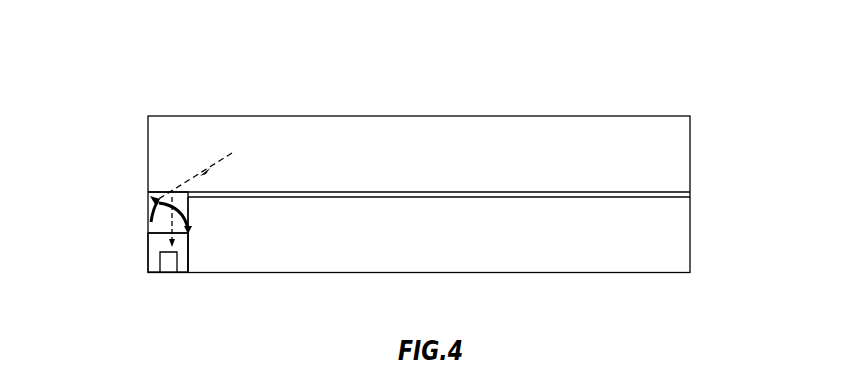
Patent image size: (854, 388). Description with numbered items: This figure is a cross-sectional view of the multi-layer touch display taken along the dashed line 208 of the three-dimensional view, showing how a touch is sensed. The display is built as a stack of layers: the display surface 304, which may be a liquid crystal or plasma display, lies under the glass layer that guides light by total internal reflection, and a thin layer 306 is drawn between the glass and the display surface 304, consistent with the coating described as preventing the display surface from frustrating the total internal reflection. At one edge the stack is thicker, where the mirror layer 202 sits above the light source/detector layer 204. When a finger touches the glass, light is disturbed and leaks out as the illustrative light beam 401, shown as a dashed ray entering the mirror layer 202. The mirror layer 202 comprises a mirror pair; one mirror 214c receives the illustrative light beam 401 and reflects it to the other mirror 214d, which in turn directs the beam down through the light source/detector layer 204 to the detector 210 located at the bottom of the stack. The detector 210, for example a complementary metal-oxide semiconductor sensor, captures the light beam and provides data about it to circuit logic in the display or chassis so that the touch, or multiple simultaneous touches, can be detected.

The dashed line 208 is at (148, 78).
The mirror layer 202 is at (128, 232).
The light source/detector layer 204 is at (212, 264).
The detector 210 is at (170, 263).
The mirror 214c is at (145, 224).
The mirror 214d is at (185, 212).
The display surface 304 is at (665, 233).
The reflective layer 306 is at (662, 190).
The illustrative light beam 401 is at (215, 160).